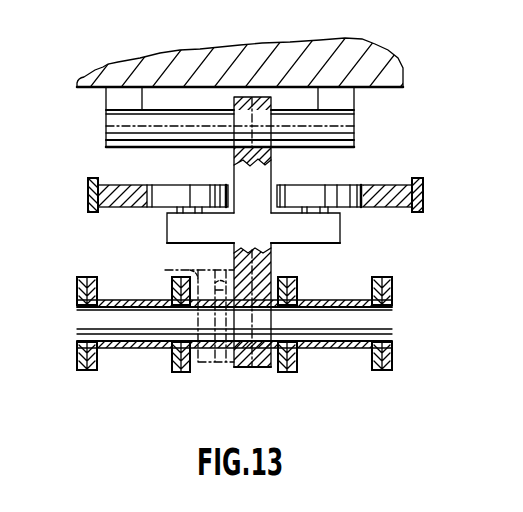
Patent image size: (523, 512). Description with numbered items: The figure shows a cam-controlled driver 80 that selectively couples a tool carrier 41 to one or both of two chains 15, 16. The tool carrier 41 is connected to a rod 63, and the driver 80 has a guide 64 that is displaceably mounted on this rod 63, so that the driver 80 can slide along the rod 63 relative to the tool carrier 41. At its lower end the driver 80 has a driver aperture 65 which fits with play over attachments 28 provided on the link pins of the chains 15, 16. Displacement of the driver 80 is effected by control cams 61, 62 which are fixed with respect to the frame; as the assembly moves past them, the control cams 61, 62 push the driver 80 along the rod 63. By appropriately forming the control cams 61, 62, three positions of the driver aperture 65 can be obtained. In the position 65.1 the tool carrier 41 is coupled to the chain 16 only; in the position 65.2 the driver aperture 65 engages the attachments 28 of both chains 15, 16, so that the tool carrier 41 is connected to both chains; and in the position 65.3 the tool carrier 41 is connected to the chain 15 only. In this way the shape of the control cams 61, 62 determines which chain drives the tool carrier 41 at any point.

The tool carrier 41 is at (290, 60).
The rod 63 is at (342, 128).
The guide 64 is at (228, 148).
The control cam 61 is at (100, 200).
The control cam 62 is at (390, 188).
The driver 80 is at (266, 260).
The driver aperture 65 is at (268, 356).
The position of the driver aperture 65.1 is at (250, 368).
The position of the driver aperture 65.2 is at (222, 266).
The position of the driver aperture 65.3 is at (178, 275).
The chain 15 is at (78, 371).
The chain 16 is at (386, 371).
The attachments of the link pins 28 is at (222, 362).